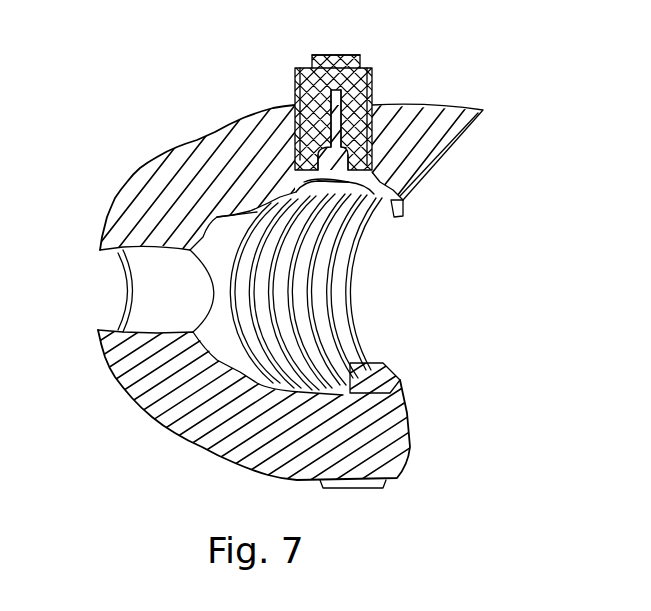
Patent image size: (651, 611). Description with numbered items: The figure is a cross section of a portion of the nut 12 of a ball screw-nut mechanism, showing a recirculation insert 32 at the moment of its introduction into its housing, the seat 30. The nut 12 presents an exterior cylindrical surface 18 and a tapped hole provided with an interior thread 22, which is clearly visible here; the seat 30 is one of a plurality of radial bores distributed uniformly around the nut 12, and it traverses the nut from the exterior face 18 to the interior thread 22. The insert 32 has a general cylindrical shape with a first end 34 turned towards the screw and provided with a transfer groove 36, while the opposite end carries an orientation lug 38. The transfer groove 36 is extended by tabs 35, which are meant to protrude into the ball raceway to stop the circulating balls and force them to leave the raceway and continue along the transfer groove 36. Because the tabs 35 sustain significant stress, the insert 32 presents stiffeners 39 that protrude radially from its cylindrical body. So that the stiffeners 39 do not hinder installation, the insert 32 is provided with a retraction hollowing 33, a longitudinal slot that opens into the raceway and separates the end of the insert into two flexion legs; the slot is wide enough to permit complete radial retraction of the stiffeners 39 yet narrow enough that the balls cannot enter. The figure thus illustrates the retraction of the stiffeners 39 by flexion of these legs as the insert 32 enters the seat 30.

The nut 12 is at (120, 412).
The exterior cylindrical surface 18 is at (247, 112).
The interior thread 22 is at (352, 342).
The seat 30 is at (357, 178).
The recirculation insert 32 is at (304, 116).
The retraction hollowing 33 is at (355, 92).
The first end 34 is at (332, 172).
The tabs 35 is at (325, 165).
The transfer groove 36 is at (343, 147).
The orientation lug 38 is at (312, 55).
The stiffeners 39 is at (332, 155).